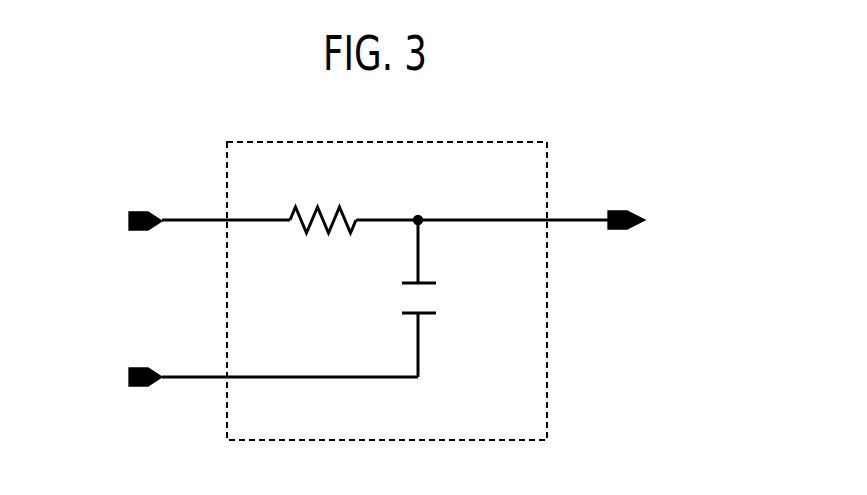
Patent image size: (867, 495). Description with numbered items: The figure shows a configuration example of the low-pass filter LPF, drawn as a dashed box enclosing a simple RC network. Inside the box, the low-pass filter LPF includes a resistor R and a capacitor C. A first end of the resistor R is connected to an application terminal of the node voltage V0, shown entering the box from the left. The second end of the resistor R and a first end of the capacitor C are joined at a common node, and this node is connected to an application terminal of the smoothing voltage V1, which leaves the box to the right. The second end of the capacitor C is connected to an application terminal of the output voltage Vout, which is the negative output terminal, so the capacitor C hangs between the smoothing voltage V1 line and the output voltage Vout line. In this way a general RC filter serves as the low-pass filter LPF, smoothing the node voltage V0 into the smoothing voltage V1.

The low-pass filter LPF is at (388, 141).
The resistor R is at (324, 205).
The capacitor C is at (431, 301).
The node voltage V0 is at (188, 222).
The smoothing voltage V1 is at (523, 222).
The output voltage Vout is at (239, 379).